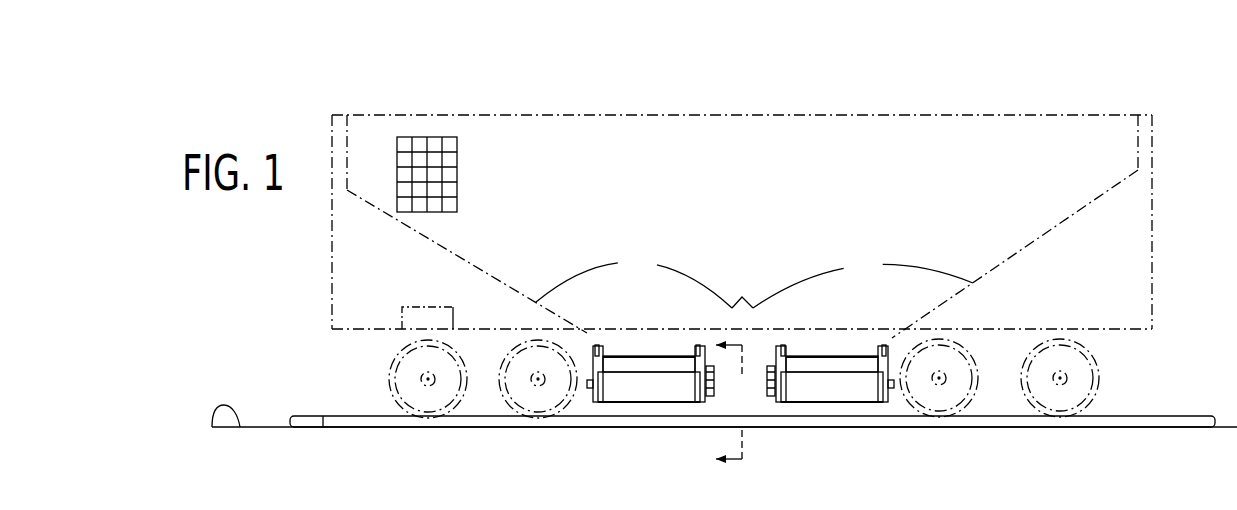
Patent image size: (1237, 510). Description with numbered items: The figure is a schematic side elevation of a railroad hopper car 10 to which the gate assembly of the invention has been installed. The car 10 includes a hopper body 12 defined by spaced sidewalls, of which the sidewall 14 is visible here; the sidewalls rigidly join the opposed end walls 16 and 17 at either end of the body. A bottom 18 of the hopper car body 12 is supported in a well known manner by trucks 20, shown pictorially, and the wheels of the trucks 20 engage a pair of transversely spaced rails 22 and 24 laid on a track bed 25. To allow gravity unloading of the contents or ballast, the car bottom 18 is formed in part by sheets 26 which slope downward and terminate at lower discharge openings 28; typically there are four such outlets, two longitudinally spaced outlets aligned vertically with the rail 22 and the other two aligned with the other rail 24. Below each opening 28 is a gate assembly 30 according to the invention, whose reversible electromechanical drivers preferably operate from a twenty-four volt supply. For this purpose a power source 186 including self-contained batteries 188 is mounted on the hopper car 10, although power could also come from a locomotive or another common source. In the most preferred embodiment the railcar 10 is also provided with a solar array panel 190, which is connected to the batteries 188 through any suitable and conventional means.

The railroad hopper car 10 is at (1046, 85).
The hopper body 12 is at (810, 112).
The sidewall 14 is at (500, 133).
The end wall 16 is at (332, 208).
The end wall 17 is at (1152, 188).
The bottom 18 is at (352, 331).
The trucks 20 is at (416, 406).
The rail 22 is at (443, 423).
The rail 24 is at (307, 427).
The track bed 25 is at (212, 427).
The sheets 26 is at (742, 254).
The discharge openings 28 is at (664, 338).
The gate assembly 30 is at (651, 410).
The power source 186 is at (415, 304).
The batteries 188 is at (445, 307).
The solar array panel 190 is at (460, 195).